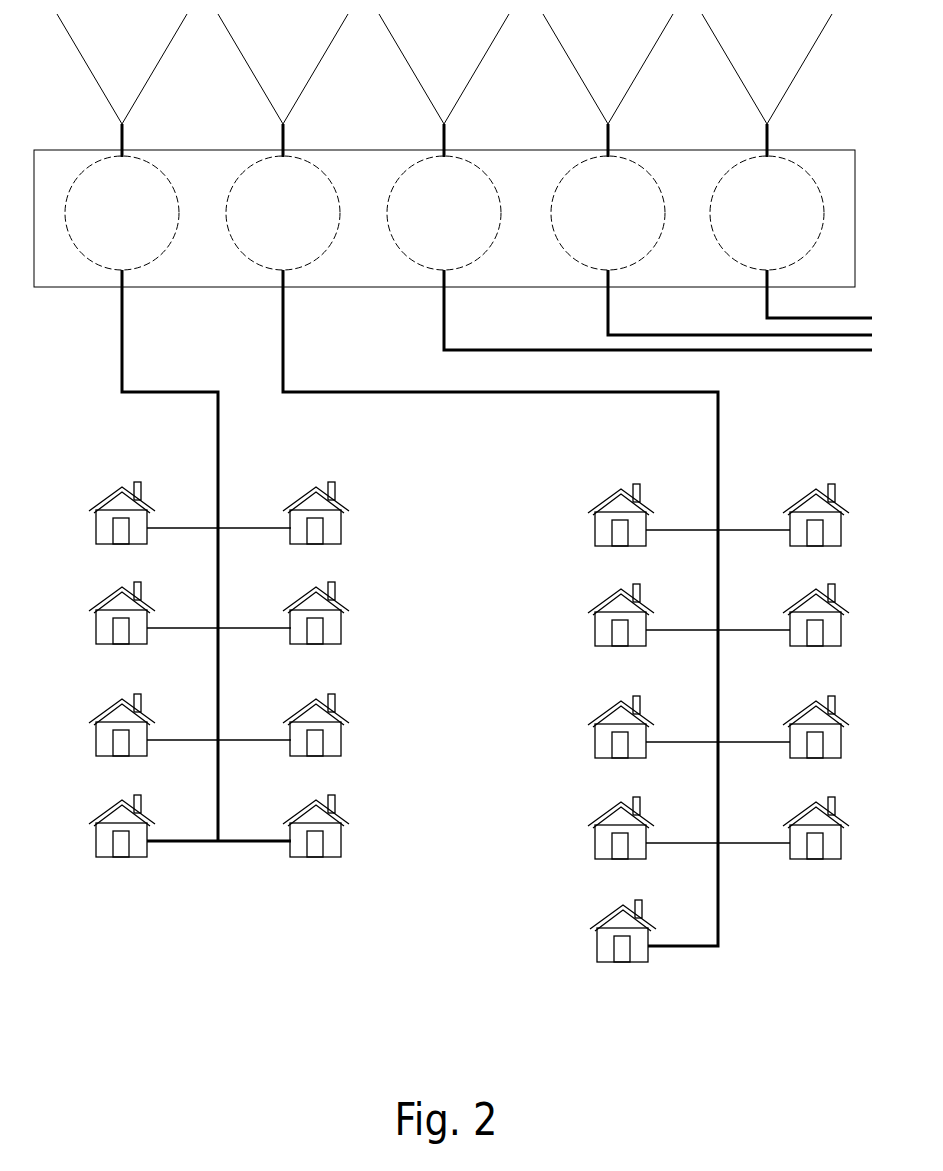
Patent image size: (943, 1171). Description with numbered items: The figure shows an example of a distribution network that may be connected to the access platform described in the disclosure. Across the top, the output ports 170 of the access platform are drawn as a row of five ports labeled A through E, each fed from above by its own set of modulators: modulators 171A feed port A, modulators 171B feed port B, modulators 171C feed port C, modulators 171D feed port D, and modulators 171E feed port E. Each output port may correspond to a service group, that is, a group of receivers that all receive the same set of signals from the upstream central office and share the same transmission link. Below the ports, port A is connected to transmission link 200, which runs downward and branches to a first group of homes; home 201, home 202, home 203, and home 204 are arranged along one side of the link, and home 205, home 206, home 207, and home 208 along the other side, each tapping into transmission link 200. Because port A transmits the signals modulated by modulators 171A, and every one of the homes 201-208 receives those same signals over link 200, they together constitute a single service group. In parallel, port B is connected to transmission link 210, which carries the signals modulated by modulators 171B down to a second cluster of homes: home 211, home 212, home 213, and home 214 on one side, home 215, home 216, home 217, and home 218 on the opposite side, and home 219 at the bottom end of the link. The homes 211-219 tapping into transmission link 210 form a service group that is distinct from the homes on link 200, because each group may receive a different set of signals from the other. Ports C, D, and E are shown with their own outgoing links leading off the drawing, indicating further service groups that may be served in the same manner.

The output ports 170 is at (805, 150).
The modulators 171A is at (122, 85).
The modulators 171B is at (283, 85).
The modulators 171C is at (444, 85).
The modulators 171D is at (608, 85).
The modulators 171E is at (767, 85).
The transmission link 200 is at (162, 390).
The transmission link 210 is at (323, 390).
The home 201 is at (122, 482).
The home 202 is at (122, 582).
The home 203 is at (122, 694).
The home 204 is at (122, 795).
The home 205 is at (317, 485).
The home 206 is at (317, 585).
The home 207 is at (317, 697).
The home 208 is at (317, 798).
The home 211 is at (621, 484).
The home 212 is at (621, 584).
The home 213 is at (621, 696).
The home 214 is at (621, 797).
The home 215 is at (816, 487).
The home 216 is at (816, 587).
The home 217 is at (816, 699).
The home 218 is at (816, 800).
The home 219 is at (622, 902).